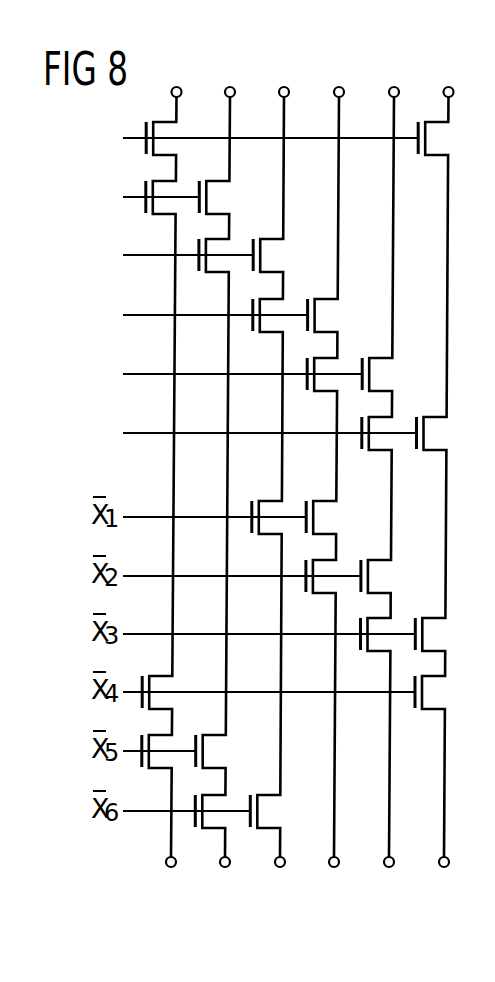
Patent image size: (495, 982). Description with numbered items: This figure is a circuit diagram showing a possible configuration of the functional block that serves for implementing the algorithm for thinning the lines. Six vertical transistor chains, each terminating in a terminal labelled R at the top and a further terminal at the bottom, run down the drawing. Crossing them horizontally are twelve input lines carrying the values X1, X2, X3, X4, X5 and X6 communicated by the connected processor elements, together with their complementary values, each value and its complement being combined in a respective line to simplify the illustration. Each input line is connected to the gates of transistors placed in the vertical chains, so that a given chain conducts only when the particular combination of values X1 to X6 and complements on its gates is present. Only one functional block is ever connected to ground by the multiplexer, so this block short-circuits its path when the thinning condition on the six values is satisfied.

The functional block R is at (302, 460).
The value X1 is at (254, 137).
The value X2 is at (145, 196).
The value X3 is at (172, 254).
The value X4 is at (199, 314).
The value X5 is at (226, 373).
The value X6 is at (254, 432).